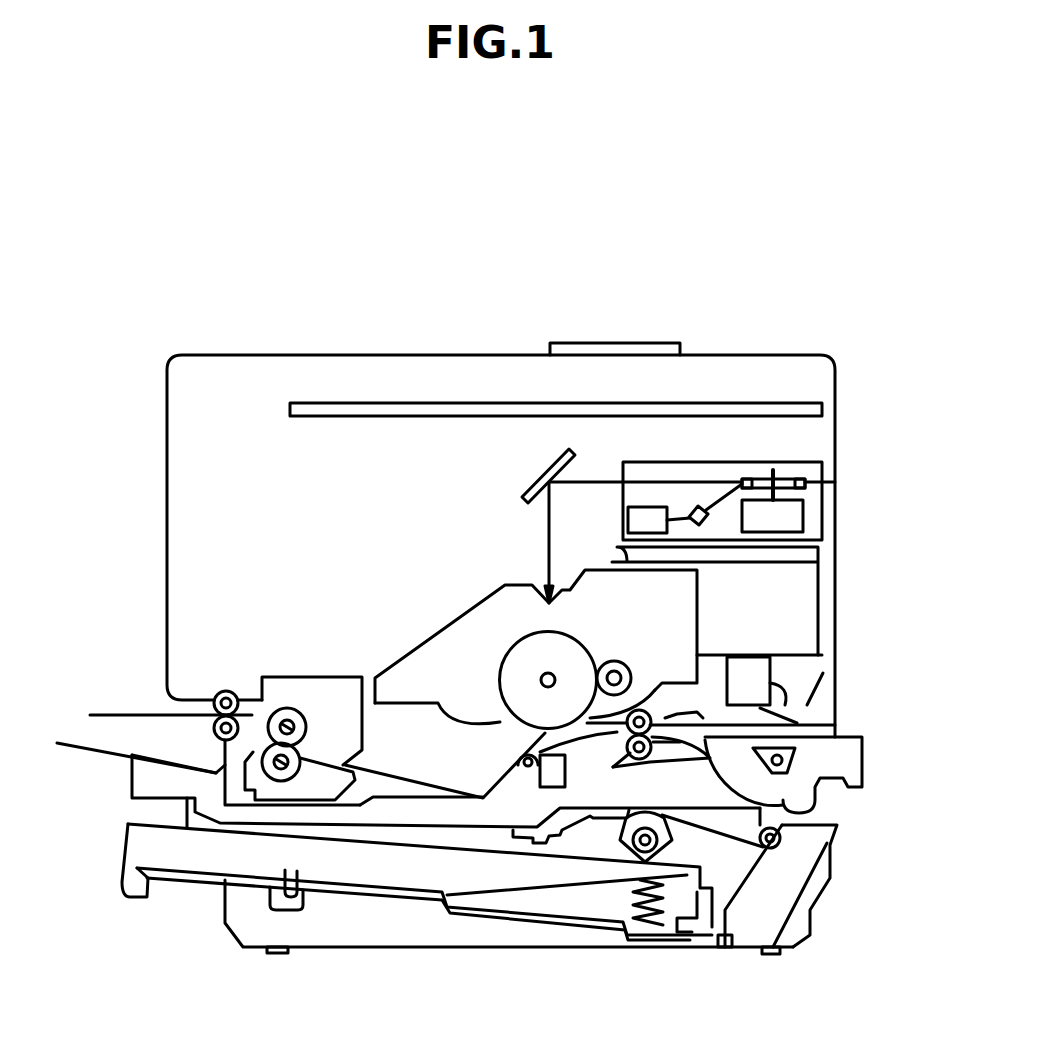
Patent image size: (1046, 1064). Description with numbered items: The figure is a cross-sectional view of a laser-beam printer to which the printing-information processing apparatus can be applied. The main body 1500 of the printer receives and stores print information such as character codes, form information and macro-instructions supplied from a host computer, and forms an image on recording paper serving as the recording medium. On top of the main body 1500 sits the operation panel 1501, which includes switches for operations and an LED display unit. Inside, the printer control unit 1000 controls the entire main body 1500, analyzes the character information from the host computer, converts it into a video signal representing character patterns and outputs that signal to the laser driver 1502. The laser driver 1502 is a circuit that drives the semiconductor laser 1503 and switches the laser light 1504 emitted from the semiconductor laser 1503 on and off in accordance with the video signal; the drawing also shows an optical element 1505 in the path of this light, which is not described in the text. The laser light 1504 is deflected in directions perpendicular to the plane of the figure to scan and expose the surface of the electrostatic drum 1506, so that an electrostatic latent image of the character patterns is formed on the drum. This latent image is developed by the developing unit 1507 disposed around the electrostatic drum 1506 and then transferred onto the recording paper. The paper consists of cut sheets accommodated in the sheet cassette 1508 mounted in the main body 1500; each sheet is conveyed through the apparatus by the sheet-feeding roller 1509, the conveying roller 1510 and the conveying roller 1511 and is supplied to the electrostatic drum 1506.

The printer control unit 1000 is at (815, 404).
The main body 1500 is at (775, 355).
The operation panel 1501 is at (623, 343).
The laser driver 1502 is at (628, 520).
The semiconductor laser 1503 is at (707, 527).
The laser light 1504 is at (710, 482).
The lens 1505 is at (835, 482).
The electrostatic drum 1506 is at (513, 643).
The developing unit 1507 is at (408, 662).
The sheet cassette 1508 is at (122, 870).
The sheet-feeding roller 1509 is at (623, 848).
The conveying roller 1510 is at (768, 852).
The conveying roller 1511 is at (640, 760).